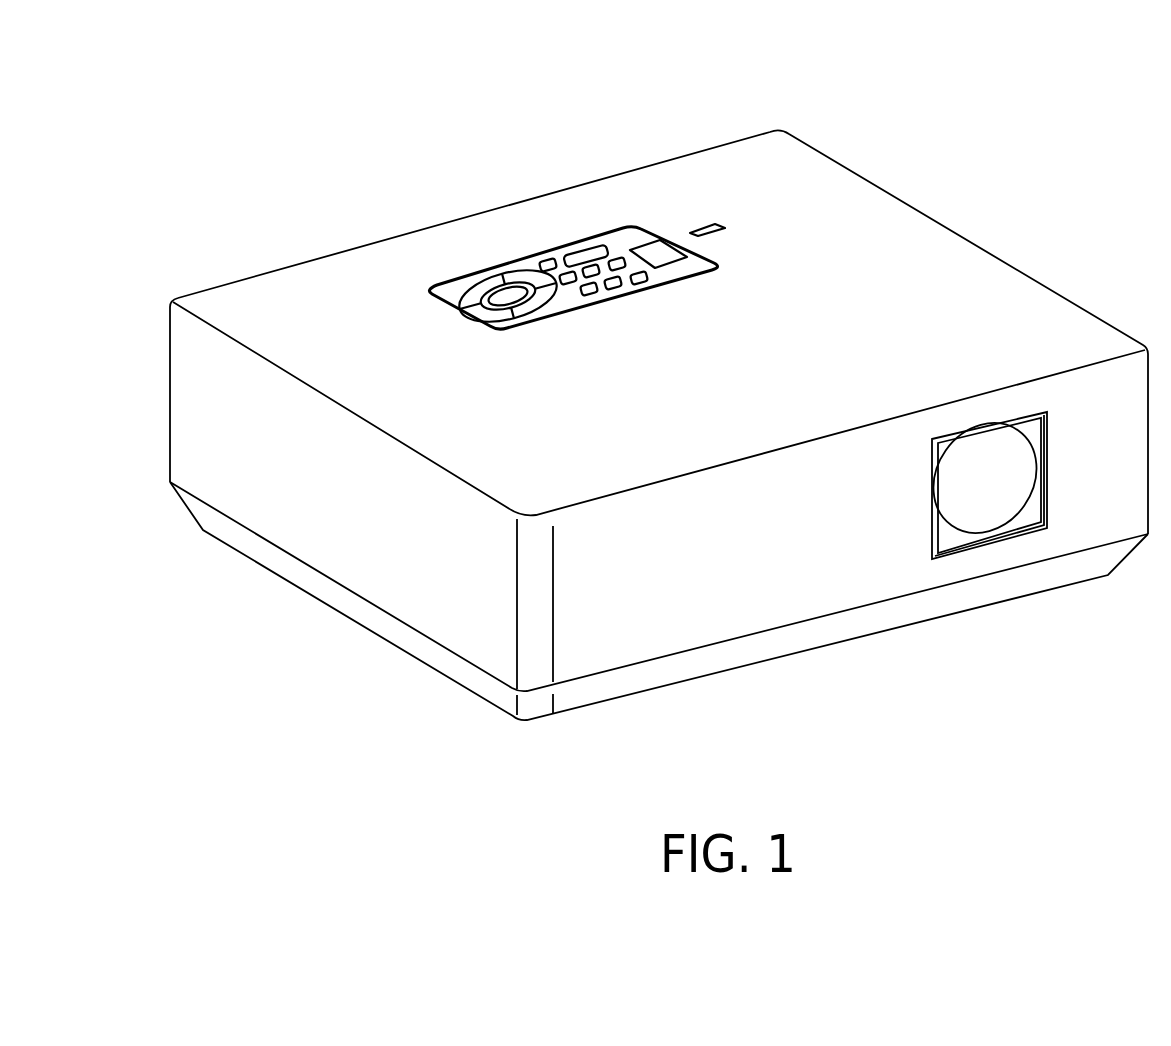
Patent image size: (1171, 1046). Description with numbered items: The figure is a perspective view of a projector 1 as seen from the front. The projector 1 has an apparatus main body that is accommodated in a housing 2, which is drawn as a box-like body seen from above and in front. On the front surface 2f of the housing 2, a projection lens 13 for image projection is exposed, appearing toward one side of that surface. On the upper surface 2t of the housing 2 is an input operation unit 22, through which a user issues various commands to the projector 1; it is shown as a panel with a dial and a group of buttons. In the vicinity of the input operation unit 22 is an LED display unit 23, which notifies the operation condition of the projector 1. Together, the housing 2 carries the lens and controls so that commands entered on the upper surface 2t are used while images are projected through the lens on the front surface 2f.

The projector 1 is at (923, 108).
The housing 2 is at (378, 263).
The upper surface 2t is at (935, 250).
The front surface 2f is at (768, 610).
The input operation unit 22 is at (627, 245).
The LED display unit 23 is at (707, 223).
The projection lens 13 is at (985, 491).